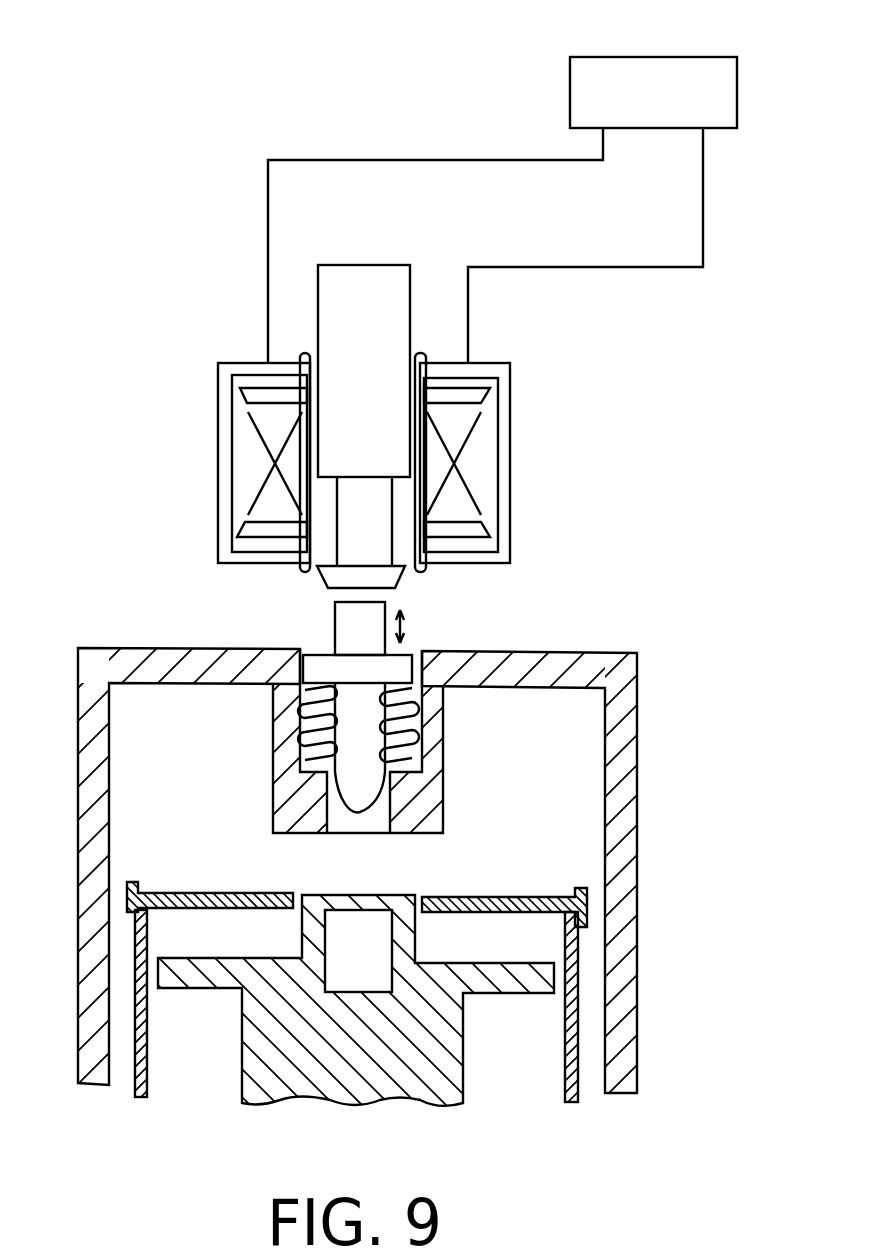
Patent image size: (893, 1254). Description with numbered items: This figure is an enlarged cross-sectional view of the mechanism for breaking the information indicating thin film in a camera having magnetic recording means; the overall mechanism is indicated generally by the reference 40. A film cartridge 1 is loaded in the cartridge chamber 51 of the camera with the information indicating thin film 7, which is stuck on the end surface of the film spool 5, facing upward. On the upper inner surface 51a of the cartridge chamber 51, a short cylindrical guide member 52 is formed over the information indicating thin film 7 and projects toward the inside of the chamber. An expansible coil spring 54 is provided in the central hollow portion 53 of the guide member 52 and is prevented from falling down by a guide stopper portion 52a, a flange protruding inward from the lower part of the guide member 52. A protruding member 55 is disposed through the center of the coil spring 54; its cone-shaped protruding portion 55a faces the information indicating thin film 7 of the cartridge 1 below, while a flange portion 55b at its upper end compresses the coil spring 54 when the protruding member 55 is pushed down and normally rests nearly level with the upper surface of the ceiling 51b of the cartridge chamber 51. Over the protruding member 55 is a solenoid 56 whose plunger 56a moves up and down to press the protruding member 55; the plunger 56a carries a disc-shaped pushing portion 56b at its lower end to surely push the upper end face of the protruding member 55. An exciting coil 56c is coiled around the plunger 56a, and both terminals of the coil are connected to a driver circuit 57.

The film cartridge 1 is at (578, 1077).
The film spool 5 is at (450, 1068).
The information indicating thin film 7 is at (344, 895).
The actuator device 40 is at (610, 536).
The cartridge chamber 51 is at (446, 851).
The upper inner surface 51a is at (584, 691).
The ceiling 51b is at (525, 655).
The guide member 52 is at (369, 750).
The guide stopper portion 52a is at (287, 792).
The central hollow portion 53 is at (458, 722).
The coil spring 54 is at (303, 727).
The protruding member 55 is at (322, 736).
The cone-shaped protruding portion 55a is at (362, 800).
The flange portion 55b is at (318, 665).
The solenoid 56 is at (420, 350).
The plunger 56a is at (362, 265).
The disc-shaped pushing portion 56b is at (400, 578).
The exciting coil 56c is at (218, 418).
The driver circuit 57 is at (672, 42).